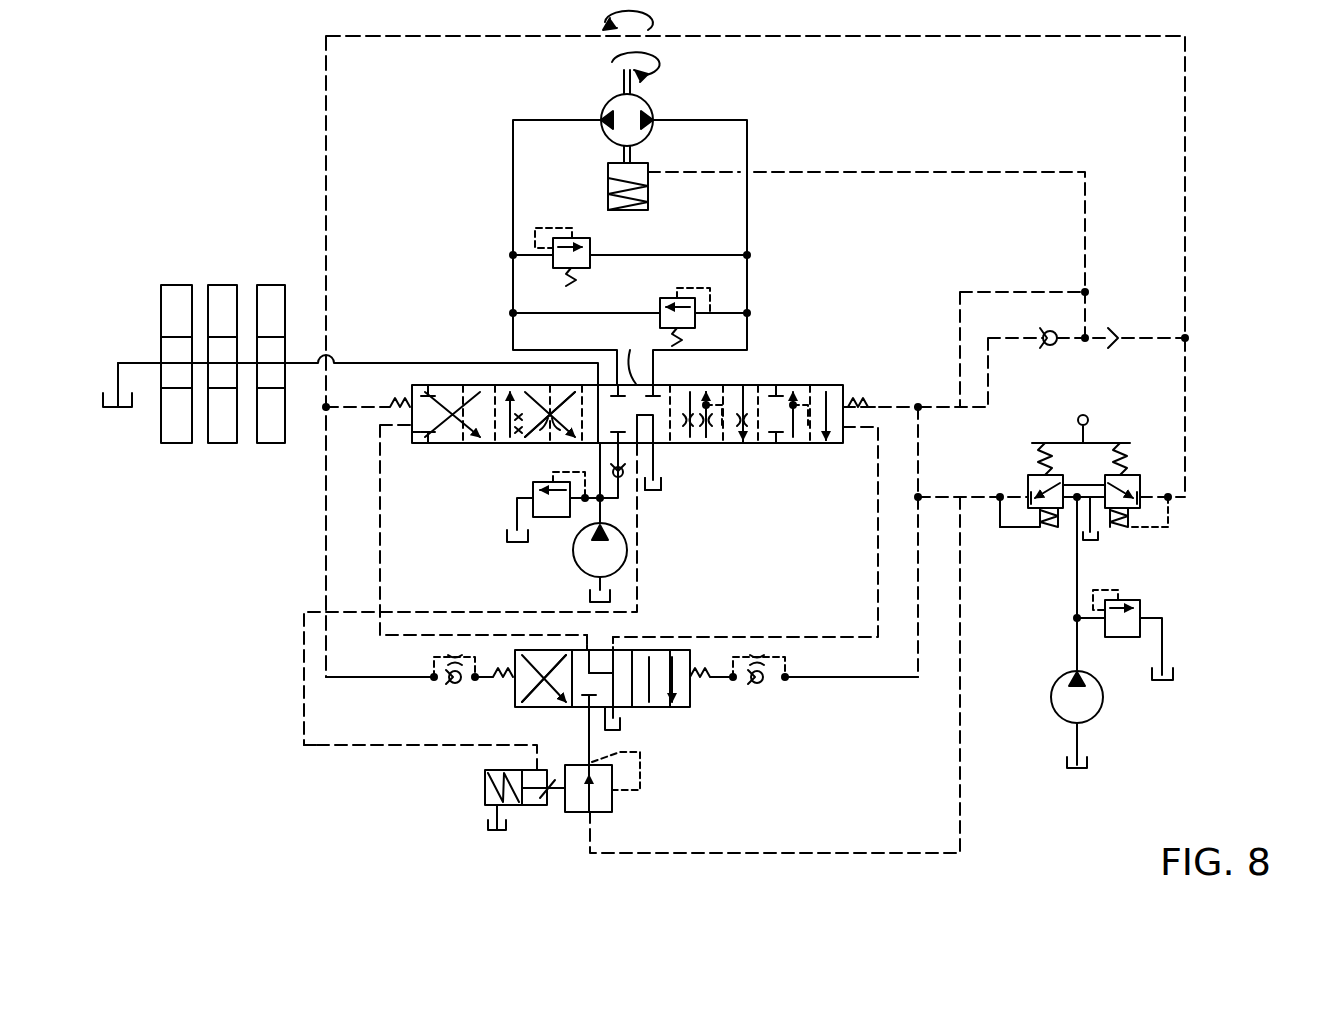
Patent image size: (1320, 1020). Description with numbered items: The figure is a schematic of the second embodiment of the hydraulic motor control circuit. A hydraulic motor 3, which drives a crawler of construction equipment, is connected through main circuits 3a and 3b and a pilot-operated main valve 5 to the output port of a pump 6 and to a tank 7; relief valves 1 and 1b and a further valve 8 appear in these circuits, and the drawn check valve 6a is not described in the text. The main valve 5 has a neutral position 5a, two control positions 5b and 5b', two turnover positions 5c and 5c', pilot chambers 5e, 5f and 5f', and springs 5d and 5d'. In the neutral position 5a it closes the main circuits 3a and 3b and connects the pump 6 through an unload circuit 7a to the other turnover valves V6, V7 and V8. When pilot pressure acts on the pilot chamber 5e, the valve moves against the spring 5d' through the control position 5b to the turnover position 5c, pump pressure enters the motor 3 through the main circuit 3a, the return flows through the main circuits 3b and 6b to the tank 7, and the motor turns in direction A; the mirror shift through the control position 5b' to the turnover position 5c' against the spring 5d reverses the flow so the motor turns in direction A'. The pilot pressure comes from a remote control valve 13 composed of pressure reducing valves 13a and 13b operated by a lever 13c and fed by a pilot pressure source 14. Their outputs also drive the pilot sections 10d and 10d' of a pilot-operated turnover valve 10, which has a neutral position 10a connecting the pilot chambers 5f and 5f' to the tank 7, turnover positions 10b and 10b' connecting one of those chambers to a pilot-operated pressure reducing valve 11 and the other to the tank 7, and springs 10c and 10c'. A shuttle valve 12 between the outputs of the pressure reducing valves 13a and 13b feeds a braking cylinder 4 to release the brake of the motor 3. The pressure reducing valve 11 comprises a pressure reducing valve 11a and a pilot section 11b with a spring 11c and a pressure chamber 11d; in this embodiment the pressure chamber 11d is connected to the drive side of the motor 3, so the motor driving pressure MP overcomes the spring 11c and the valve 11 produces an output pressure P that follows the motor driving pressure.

The relief valve 1 is at (590, 242).
The relief valve 1b is at (660, 305).
The hydraulic motor 3 is at (655, 110).
The main circuit 3a is at (513, 160).
The main circuit 3b is at (747, 128).
The braking cylinder 4 is at (648, 205).
The main valve of pilot operation type 5 is at (762, 368).
The neutral position 5a is at (624, 351).
The control position 5b is at (716, 441).
The control position 5b' is at (520, 437).
The turnover position 5c is at (777, 461).
The turnover position 5c' is at (426, 464).
The spring 5d is at (865, 375).
The spring 5d' is at (375, 389).
The pilot chamber 5e is at (410, 415).
The pilot chamber 5f is at (831, 441).
The pilot chamber 5f' is at (402, 457).
The pump 6 is at (573, 555).
The check valve 6a is at (618, 460).
The main circuit 6b is at (637, 448).
The tank 7 is at (118, 410).
The unload circuit 7a is at (362, 363).
The relief valve 8 is at (533, 495).
The turnover valve of pilot operation type 10 is at (690, 705).
The neutral position 10a is at (600, 655).
The turnover position 10b is at (631, 759).
The turnover position 10b' is at (514, 699).
The spring 10c is at (683, 626).
The spring 10c' is at (504, 620).
The pilot section 10d is at (804, 690).
The pilot section 10d' is at (419, 687).
The pressure reducing valve of pilot operation type 11 is at (650, 790).
The pressure reducing valve 11a is at (612, 805).
The pilot section 11b is at (510, 805).
The spring 11c is at (485, 790).
The pressure chamber 11d is at (535, 802).
The shuttle valve 12 is at (1112, 332).
The remote control valve 13 is at (1132, 538).
The pressure reducing valve 13a is at (1030, 478).
The pressure reducing valve 13b is at (1110, 478).
The lever 13c is at (1088, 425).
The pilot pressure source 14 is at (1055, 712).
The turnover valve V6 is at (270, 443).
The turnover valve V7 is at (222, 443).
The turnover valve V8 is at (178, 443).
The arrow direction A is at (639, 70).
The opposite direction A' is at (638, 21).
The output pressure P is at (576, 759).
The command pressure MP is at (340, 761).